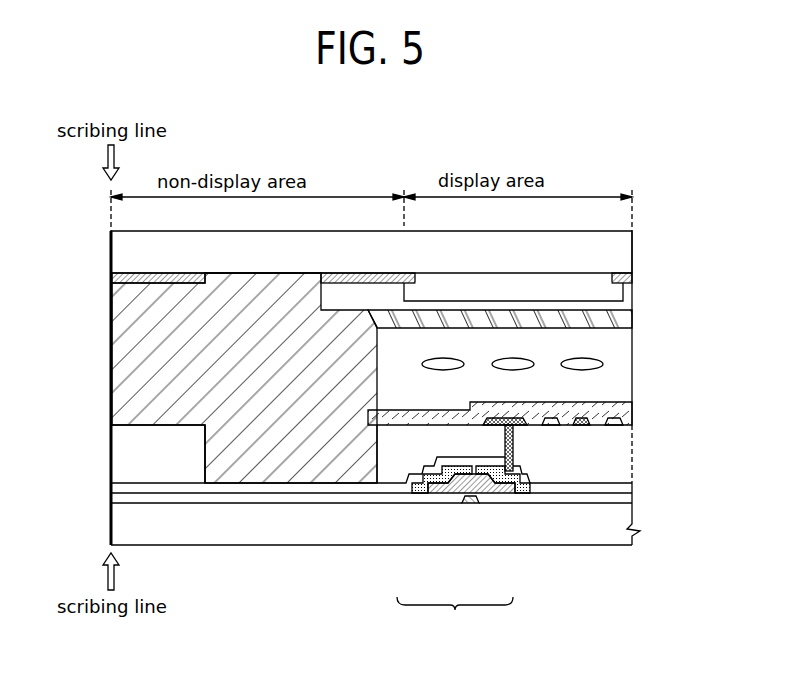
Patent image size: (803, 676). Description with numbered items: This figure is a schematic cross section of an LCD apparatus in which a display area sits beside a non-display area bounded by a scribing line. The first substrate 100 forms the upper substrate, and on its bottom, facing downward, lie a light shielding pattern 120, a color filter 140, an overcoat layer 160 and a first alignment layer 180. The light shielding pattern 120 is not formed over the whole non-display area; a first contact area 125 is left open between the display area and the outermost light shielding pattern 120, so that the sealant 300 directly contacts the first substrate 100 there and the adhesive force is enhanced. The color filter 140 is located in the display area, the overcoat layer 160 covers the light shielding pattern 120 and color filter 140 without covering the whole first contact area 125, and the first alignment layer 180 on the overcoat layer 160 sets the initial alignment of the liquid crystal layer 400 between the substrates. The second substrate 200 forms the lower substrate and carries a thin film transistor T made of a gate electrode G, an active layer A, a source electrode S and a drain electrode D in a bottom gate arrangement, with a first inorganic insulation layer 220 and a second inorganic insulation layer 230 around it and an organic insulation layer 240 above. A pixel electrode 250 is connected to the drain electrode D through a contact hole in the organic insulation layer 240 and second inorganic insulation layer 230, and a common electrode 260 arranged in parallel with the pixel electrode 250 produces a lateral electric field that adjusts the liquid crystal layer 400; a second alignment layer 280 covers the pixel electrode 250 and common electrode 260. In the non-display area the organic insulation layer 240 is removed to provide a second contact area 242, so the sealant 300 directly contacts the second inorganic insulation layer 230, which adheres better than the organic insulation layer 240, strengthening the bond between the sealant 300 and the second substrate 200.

The first substrate 100 is at (627, 253).
The light shielding pattern 120 is at (125, 279).
The first contact area 125 is at (296, 268).
The color filter 140 is at (568, 293).
The overcoat layer 160 is at (627, 300).
The first alignment layer 180 is at (622, 318).
The second substrate 200 is at (633, 522).
The first inorganic insulation layer 220 is at (630, 500).
The second inorganic insulation layer 230 is at (630, 487).
The organic insulation layer 240 is at (133, 452).
The second contact area 242 is at (272, 477).
The pixel electrode 250 is at (513, 445).
The common electrode 260 is at (552, 425).
The second alignment layer 280 is at (623, 408).
The sealant 300 is at (133, 390).
The liquid crystal layer 400 is at (624, 361).
The source electrode S is at (425, 493).
The active layer A is at (447, 493).
The gate electrode G is at (475, 503).
The drain electrode D is at (517, 493).
The thin film transistor T is at (455, 614).